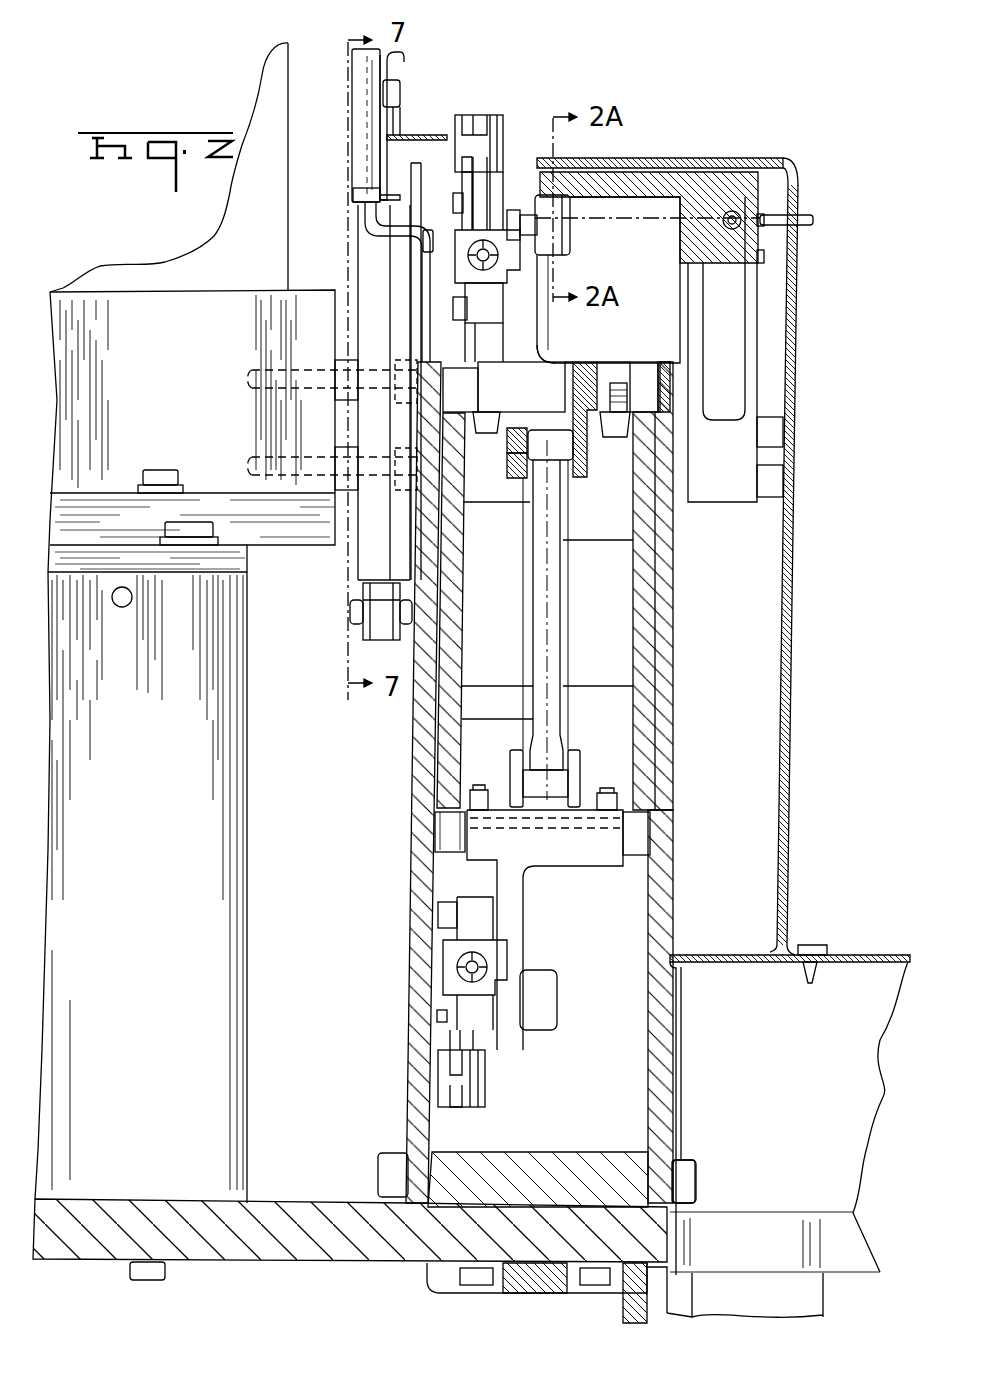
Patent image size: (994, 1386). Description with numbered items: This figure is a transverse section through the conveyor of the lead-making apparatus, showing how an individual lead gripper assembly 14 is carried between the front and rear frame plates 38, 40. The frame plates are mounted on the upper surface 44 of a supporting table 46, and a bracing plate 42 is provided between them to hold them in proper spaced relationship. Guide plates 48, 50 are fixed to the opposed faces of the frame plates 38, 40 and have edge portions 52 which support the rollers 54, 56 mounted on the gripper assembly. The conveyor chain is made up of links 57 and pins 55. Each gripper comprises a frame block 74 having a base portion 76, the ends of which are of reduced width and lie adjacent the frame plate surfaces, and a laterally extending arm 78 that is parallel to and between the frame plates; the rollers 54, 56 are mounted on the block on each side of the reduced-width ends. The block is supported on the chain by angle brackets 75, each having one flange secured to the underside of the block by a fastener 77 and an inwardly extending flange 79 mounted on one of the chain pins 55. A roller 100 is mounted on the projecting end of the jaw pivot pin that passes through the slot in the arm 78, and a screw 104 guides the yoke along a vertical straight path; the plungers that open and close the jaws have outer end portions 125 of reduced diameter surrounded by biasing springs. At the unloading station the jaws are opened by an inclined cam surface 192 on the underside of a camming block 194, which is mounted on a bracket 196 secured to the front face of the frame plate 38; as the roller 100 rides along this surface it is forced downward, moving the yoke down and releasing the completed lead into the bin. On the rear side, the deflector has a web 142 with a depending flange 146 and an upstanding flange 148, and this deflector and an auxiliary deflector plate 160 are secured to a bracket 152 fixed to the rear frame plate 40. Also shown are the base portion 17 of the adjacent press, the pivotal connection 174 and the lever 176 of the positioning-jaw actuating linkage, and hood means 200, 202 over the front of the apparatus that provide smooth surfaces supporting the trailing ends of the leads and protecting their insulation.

The lead gripper assembly 14 is at (490, 112).
The base portion of the press 17 is at (200, 300).
The front frame plate 38 is at (657, 1040).
The rear frame plate 40 is at (416, 940).
The bracing plate 42 is at (547, 1170).
The upper surface 44 is at (313, 1200).
The supporting table 46 is at (358, 1240).
The guide plate 48 is at (642, 572).
The guide plate 50 is at (455, 548).
The edge portions 52 is at (440, 412).
The roller 54 is at (460, 378).
The chain pins 55 is at (552, 452).
The roller 56 is at (643, 362).
The chain links 57 is at (515, 478).
The frame block 74 is at (550, 352).
The angle brackets 75 is at (614, 437).
The base portion 76 is at (522, 402).
The fastener 77 is at (617, 385).
The laterally extending arm 78 is at (523, 318).
The inwardly extending flange 79 is at (509, 440).
The roller 100 is at (572, 238).
The screw 104 is at (459, 312).
The outer end portions of the plungers 125 is at (470, 254).
The web 142 is at (426, 133).
The depending flange 146 is at (372, 195).
The upstanding flange 148 is at (393, 62).
The bracket 152 is at (412, 273).
The auxiliary deflector plate 160 is at (358, 126).
The pivotal connection 174 is at (368, 596).
The lever 176 is at (380, 628).
The inclined cam surface 192 is at (620, 196).
The camming block 194 is at (718, 186).
The bracket 196 is at (705, 393).
The hood means 200 is at (790, 652).
The hood means 202 is at (862, 954).